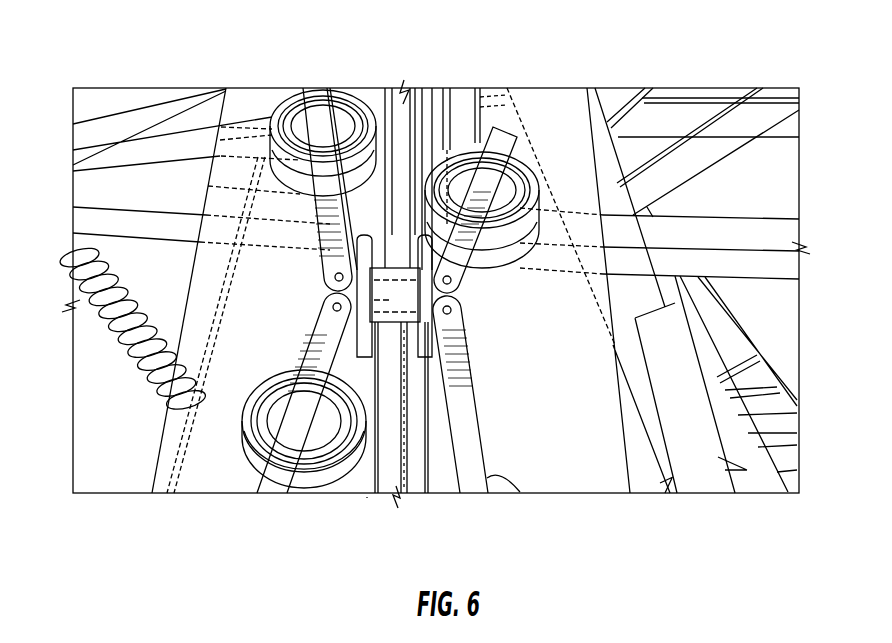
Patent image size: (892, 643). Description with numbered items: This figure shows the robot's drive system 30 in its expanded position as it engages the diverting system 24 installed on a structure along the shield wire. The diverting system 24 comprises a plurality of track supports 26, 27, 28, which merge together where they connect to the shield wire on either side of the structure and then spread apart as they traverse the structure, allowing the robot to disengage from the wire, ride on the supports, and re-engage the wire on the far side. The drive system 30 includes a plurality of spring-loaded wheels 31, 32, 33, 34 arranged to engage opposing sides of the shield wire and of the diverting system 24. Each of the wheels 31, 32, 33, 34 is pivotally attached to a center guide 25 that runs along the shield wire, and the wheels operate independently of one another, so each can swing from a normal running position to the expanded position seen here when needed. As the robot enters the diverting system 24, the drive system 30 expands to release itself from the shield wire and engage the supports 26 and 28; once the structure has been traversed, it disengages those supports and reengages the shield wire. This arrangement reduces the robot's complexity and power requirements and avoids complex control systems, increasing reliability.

The diverting system 24 is at (367, 509).
The center guide 25 is at (333, 292).
The track support 26 is at (463, 108).
The track support 27 is at (412, 88).
The track support 28 is at (348, 185).
The drive system 30 is at (245, 328).
The spring-loaded wheel 31 is at (240, 437).
The spring-loaded wheel 32 is at (287, 120).
The spring-loaded wheel 33 is at (497, 478).
The spring-loaded wheel 34 is at (518, 195).